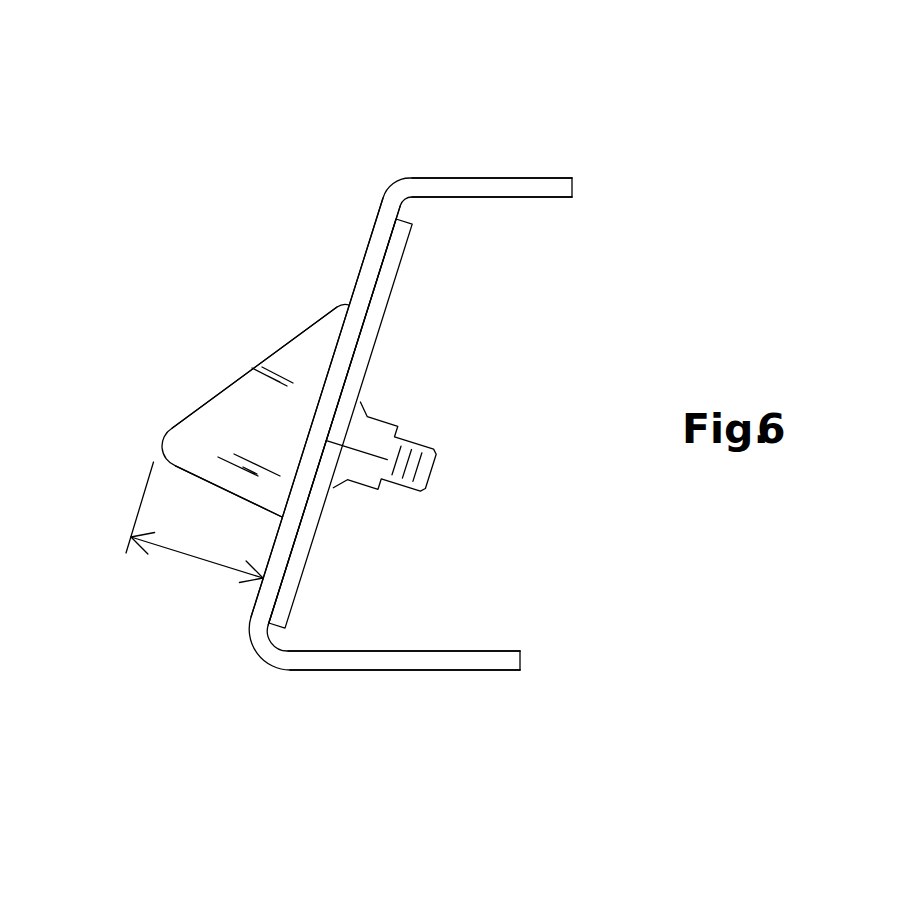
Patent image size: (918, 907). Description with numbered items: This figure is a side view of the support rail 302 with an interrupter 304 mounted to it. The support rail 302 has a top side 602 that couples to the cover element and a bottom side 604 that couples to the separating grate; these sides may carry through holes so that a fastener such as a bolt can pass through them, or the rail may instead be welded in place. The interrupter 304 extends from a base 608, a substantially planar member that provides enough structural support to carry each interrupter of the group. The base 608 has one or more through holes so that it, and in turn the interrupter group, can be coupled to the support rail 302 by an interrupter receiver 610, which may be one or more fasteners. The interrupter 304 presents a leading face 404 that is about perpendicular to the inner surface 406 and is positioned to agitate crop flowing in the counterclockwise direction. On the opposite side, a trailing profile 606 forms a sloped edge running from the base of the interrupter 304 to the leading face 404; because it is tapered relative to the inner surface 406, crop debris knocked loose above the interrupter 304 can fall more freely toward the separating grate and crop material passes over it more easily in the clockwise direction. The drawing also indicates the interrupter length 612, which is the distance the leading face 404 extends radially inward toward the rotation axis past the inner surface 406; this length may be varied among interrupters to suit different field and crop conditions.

The support rail 302 is at (395, 196).
The interrupter 304 is at (238, 394).
The leading face 404 is at (188, 486).
The inner surface 406 is at (242, 606).
The top side 602 is at (468, 166).
The bottom side 604 is at (356, 684).
The trailing profile 606 is at (270, 332).
The base 608 is at (378, 312).
The interrupter receiver 610 is at (433, 434).
The interrupter length 612 is at (176, 553).